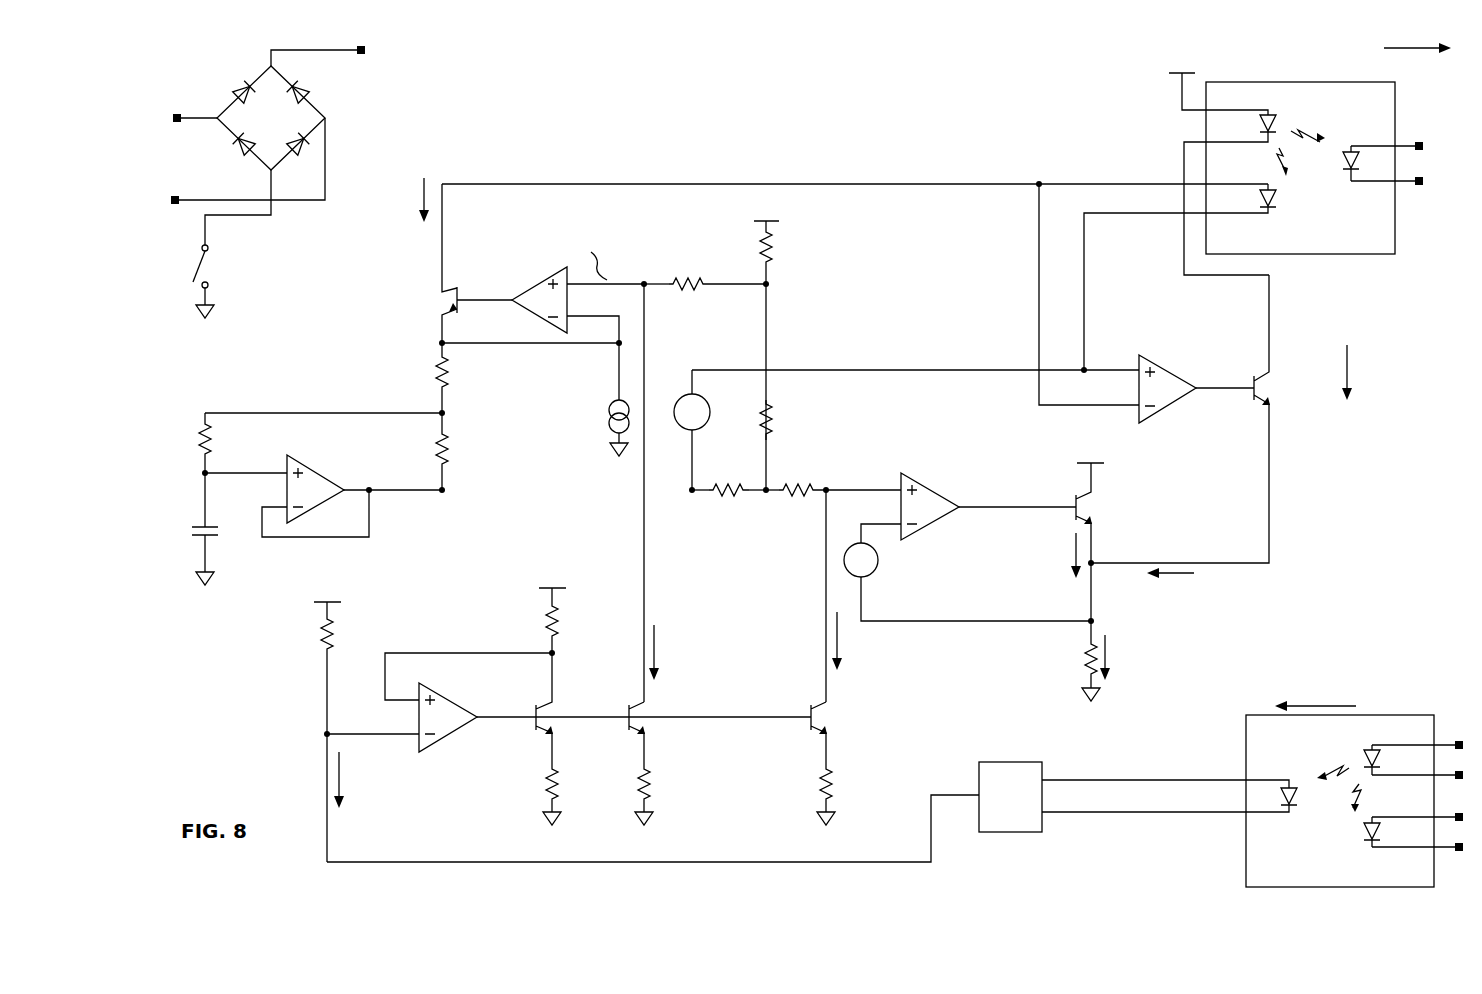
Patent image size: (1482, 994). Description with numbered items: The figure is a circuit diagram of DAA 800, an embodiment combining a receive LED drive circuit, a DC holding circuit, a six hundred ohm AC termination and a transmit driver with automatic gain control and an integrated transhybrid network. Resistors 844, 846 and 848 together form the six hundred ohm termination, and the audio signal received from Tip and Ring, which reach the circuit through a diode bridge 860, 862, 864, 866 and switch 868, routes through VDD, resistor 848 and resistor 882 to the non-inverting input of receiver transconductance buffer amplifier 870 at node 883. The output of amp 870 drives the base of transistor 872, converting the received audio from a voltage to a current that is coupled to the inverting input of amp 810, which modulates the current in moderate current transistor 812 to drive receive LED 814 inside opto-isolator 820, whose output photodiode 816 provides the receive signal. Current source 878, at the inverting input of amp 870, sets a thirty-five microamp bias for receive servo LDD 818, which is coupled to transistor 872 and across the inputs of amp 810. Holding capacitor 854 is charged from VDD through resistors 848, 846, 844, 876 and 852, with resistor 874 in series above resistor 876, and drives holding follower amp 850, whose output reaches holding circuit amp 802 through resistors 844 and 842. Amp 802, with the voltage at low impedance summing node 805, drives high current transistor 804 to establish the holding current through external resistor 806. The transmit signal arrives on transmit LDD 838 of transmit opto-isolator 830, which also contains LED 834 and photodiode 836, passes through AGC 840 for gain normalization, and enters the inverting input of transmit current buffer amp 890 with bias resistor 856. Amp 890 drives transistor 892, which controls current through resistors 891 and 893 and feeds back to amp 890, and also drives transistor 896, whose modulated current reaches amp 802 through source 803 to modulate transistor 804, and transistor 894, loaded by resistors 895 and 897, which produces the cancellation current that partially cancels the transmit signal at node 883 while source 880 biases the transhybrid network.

The DAA 800 is at (727, 111).
The holding circuit amp 802 is at (918, 473).
The 1V reference source 803 is at (858, 534).
The high current transistor 804 is at (1074, 494).
The low impedance summing node 805 is at (1094, 563).
The external resistor 806 is at (1084, 682).
The amp 810 is at (1179, 369).
The moderate current transistor 812 is at (1256, 406).
The receive LED 814 is at (1274, 126).
The receive photodiode 816 is at (1350, 178).
The receive servo LDD 818 is at (1273, 208).
The receive opto isolator 820 is at (1396, 233).
The transmit opto-isolator 830 is at (1247, 761).
The transmit LED 834 is at (1364, 758).
The transmit photodiode 836 is at (1372, 847).
The transmit LDD 838 is at (1289, 810).
The AGC 840 is at (980, 780).
The resistor 842 is at (805, 490).
The resistor 844 is at (724, 486).
The resistor 846 is at (760, 426).
The resistor 848 is at (776, 258).
The holding follower amp 850 is at (306, 462).
The resistor 852 is at (204, 462).
The holding capacitor 854 is at (214, 537).
The 12.6K resistor 856 is at (330, 632).
The bridge diode 860 is at (238, 93).
The bridge diode 862 is at (314, 90).
The bridge diode 864 is at (308, 154).
The bridge diode 866 is at (246, 154).
The hook switch 868 is at (200, 281).
The receiver transconductance buffer amplifier 870 is at (550, 270).
The transistor 872 is at (455, 290).
The 9.9K resistor 874 is at (445, 392).
The resistor 876 is at (450, 443).
The current source 878 is at (610, 432).
The .7V voltage source 880 is at (688, 389).
The resistor 882 is at (700, 294).
The node 883 is at (645, 293).
The transmit current buffer amp 890 is at (458, 702).
The resistor 891 is at (548, 628).
The transistor 892 is at (536, 704).
The resistor 893 is at (560, 777).
The transistor 894 is at (630, 706).
The 1.8K resistor 895 is at (640, 797).
The transistor 896 is at (810, 706).
The 1.8K resistor 897 is at (821, 787).